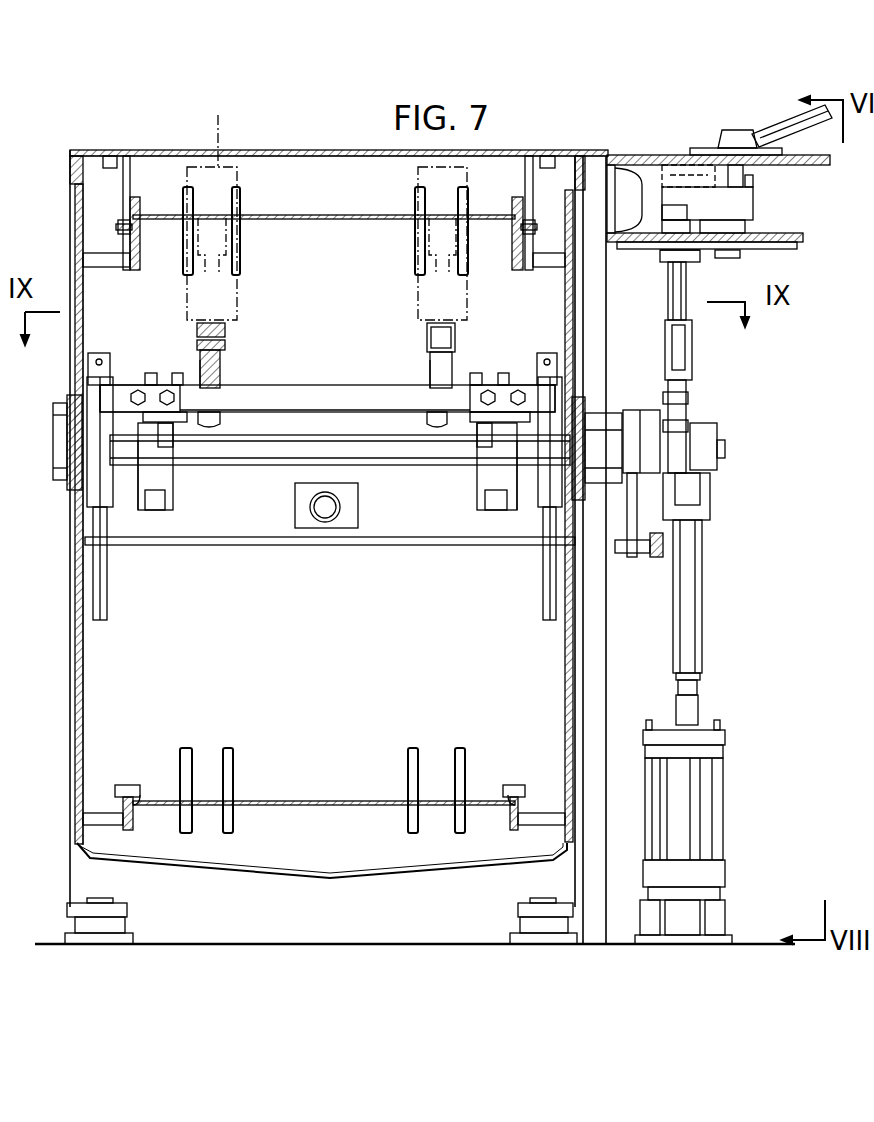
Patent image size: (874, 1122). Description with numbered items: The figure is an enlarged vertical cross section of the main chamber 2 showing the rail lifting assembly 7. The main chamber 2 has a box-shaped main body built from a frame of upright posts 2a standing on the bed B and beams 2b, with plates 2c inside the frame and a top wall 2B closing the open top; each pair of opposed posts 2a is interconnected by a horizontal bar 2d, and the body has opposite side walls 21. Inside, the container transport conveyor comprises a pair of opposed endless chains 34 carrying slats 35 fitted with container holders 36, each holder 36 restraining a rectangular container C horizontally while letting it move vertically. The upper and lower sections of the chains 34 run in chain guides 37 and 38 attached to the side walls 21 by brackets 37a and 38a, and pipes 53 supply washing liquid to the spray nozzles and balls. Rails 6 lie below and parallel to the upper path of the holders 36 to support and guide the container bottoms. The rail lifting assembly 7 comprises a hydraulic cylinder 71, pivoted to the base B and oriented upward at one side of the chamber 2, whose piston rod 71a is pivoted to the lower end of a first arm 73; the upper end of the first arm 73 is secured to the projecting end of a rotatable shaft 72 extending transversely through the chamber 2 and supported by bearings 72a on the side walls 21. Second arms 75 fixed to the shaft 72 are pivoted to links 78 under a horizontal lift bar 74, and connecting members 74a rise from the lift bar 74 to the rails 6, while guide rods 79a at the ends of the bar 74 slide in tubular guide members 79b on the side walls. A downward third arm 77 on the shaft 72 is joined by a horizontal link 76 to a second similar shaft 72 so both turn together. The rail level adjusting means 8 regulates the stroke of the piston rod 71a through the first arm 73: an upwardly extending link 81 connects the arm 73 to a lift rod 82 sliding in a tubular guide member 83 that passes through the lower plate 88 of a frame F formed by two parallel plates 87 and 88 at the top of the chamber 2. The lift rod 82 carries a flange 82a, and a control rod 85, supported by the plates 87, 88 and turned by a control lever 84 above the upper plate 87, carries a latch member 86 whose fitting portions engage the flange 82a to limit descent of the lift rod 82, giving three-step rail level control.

The main chamber 2 is at (88, 141).
The upright posts 2a is at (72, 765).
The beams 2b is at (72, 178).
The top wall 2B is at (314, 150).
The plates 2c is at (406, 878).
The horizontal bar 2d is at (385, 545).
The rails 6 is at (226, 332).
The rail lifting assembly 7 is at (303, 386).
The rail level adjusting means 8 is at (694, 345).
The side walls 21 is at (74, 670).
The endless chains 34 is at (122, 224).
The slats 35 is at (338, 216).
The container holders 36 is at (242, 200).
The chain guide 37 is at (140, 215).
The bracket 37a is at (115, 268).
The chain guide 38 is at (135, 802).
The bracket 38a is at (100, 813).
The pipes 53 is at (297, 508).
The hydraulic cylinder 71 is at (690, 808).
The piston rod 71a is at (690, 606).
The rotatable shaft 72 is at (382, 452).
The bearings 72a is at (57, 440).
The first arm 73 is at (706, 432).
The horizontal lift bar 74 is at (334, 392).
The connecting members 74a is at (220, 378).
The second arms 75 is at (165, 500).
The horizontal link 76 is at (655, 560).
The third arms 77 is at (712, 515).
The link 78 is at (178, 470).
The guide rods 79a is at (107, 592).
The tubular guide members 79b is at (113, 500).
The link 81 is at (688, 365).
The lift rod 82 is at (686, 290).
The flange 82a is at (668, 200).
The tubular guide member 83 is at (662, 262).
The control lever 84 is at (778, 118).
The control rod 85 is at (745, 170).
The latch member 86 is at (752, 202).
The upper plate 87 is at (615, 165).
The lower plate 88 is at (790, 244).
The container C is at (327, 202).
The frame F is at (800, 240).
The bed B is at (765, 943).